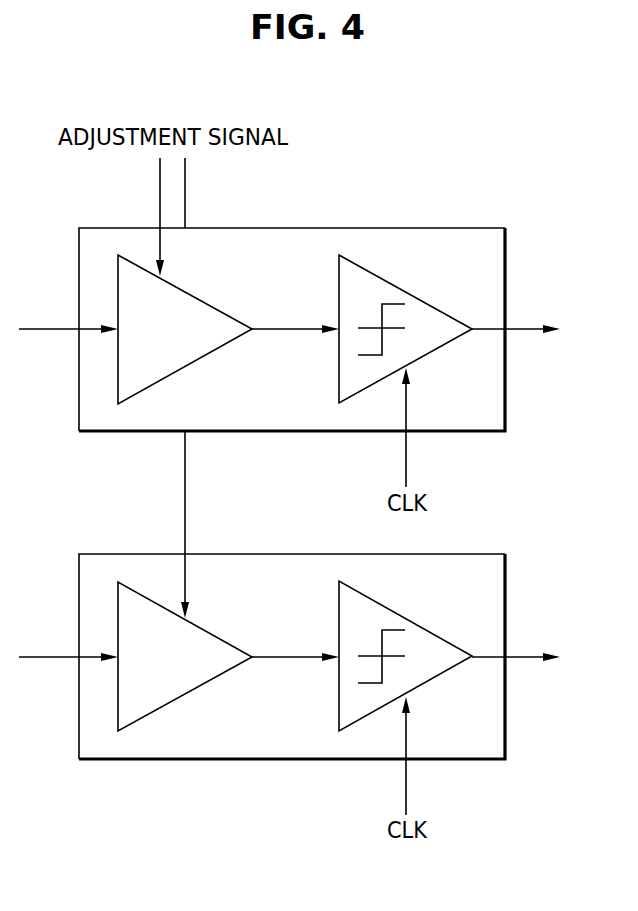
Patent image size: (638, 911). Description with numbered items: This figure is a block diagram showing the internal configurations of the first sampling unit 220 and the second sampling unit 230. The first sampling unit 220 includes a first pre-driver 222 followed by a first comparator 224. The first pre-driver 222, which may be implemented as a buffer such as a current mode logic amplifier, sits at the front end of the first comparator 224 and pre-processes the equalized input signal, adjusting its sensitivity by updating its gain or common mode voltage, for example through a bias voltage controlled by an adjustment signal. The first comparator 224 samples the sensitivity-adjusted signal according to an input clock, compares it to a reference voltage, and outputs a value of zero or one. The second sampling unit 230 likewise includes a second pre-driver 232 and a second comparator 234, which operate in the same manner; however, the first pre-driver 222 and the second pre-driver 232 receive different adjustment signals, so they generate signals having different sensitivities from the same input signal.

The first sampling unit 220 is at (430, 224).
The first pre-driver 222 is at (208, 302).
The first comparator 224 is at (428, 301).
The second sampling unit 230 is at (430, 552).
The second pre-driver 232 is at (207, 630).
The second comparator 234 is at (428, 630).